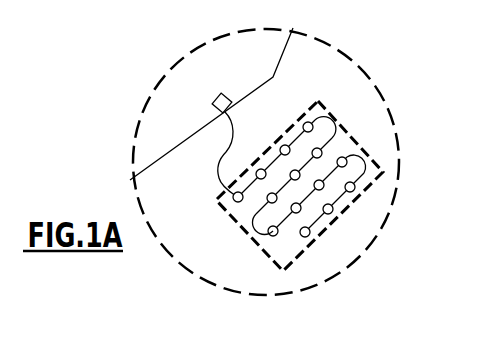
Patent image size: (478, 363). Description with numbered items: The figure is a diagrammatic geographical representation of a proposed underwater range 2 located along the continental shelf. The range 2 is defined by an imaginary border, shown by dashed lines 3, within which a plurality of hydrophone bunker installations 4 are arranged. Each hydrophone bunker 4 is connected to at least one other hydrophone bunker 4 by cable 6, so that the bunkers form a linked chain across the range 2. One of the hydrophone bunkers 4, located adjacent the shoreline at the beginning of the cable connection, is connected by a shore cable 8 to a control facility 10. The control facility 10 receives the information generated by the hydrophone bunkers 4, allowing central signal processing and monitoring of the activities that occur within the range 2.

The range 2 is at (317, 186).
The dashed lines 3 is at (375, 181).
The hydrophone bunker installations 4 is at (286, 132).
The cable 6 is at (254, 231).
The shore cable 8 is at (218, 164).
The control facility 10 is at (211, 99).